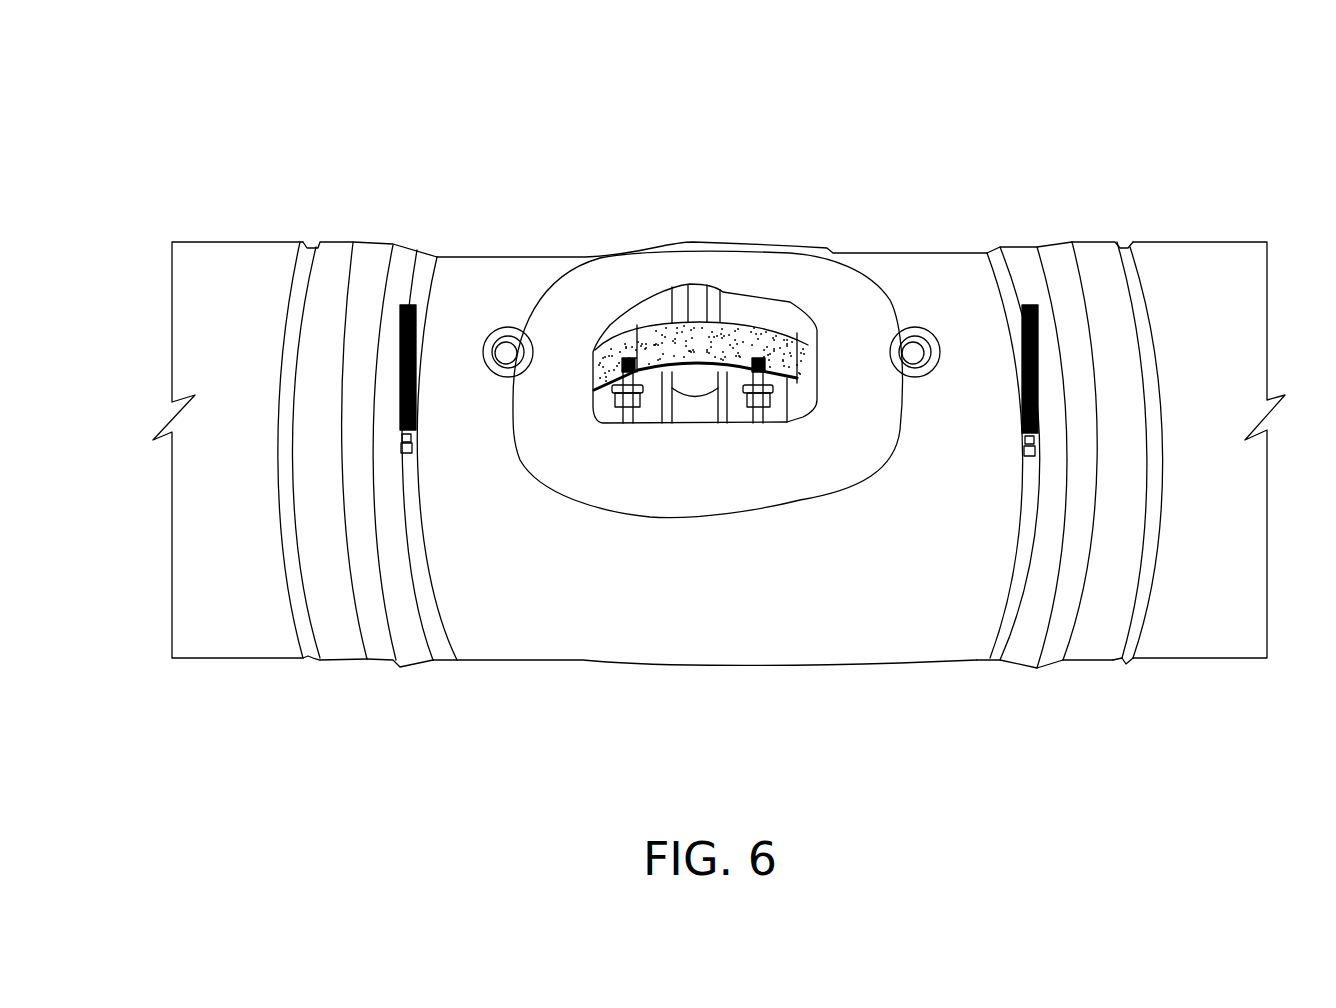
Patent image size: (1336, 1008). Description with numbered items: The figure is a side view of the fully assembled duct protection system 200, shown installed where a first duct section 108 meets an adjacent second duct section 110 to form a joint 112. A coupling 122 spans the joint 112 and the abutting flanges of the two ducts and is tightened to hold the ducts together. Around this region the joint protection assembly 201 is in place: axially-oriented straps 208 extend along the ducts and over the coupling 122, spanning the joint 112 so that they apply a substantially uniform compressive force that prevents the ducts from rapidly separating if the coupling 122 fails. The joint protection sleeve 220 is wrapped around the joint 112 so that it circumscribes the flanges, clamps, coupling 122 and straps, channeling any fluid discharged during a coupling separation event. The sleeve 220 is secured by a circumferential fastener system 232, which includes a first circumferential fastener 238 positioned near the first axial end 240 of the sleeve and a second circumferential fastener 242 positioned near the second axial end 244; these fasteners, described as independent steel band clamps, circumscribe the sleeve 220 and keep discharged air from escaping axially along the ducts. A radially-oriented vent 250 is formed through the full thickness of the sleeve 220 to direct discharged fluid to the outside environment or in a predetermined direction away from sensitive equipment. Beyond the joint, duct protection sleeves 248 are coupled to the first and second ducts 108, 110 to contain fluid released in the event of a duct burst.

The duct protection system 200 is at (410, 130).
The joint protection assembly 201 is at (410, 212).
The duct protection sleeves 248 is at (180, 243).
The circumferential fastener system 232 is at (442, 253).
The axial straps 208 is at (627, 345).
The radially-oriented vent 250 is at (668, 343).
The joint 112 is at (705, 279).
The coupling 122 is at (718, 295).
The joint protection sleeve 220 is at (1095, 242).
The first axial end 240 is at (297, 560).
The first circumferential fastener 238 is at (413, 572).
The second circumferential fastener 242 is at (1018, 573).
The second axial end 244 is at (1135, 609).
The first duct section 108 is at (313, 660).
The second duct section 110 is at (1133, 655).